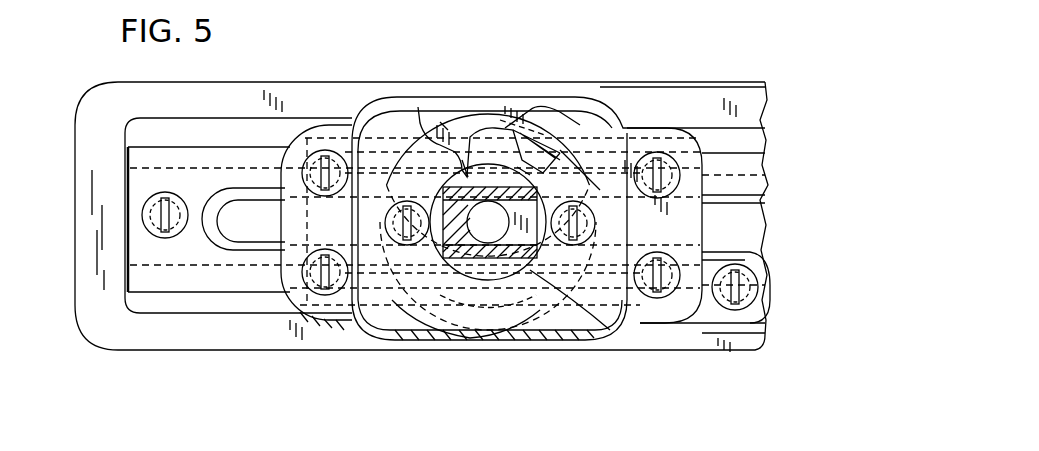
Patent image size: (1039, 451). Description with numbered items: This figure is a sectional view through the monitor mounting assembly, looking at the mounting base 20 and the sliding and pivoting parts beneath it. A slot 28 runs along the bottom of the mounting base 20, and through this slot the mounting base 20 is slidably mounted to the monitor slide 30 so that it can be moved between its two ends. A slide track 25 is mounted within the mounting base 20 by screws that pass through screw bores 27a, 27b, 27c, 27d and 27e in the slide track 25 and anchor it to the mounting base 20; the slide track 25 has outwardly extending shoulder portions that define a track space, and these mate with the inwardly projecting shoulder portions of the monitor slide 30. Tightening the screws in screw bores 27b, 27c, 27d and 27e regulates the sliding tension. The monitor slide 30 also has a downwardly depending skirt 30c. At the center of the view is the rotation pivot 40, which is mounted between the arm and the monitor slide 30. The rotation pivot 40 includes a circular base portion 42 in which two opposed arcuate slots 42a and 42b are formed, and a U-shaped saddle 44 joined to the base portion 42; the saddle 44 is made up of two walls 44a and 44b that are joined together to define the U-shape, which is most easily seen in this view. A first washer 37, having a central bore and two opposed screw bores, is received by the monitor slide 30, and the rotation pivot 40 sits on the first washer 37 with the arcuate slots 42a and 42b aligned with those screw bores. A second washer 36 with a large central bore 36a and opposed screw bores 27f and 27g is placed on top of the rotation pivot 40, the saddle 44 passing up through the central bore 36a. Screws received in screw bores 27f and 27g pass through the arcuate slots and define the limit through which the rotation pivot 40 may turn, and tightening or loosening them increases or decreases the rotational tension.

The mounting base 20 is at (296, 82).
The slide track 25 is at (183, 150).
The screw bore 27a is at (143, 208).
The screw bore 27b is at (325, 156).
The screw bore 27c is at (298, 284).
The screw bore 27d is at (678, 162).
The screw bore 27e is at (693, 323).
The screw bore 27f is at (400, 201).
The screw bore 27g is at (597, 225).
The slot 28 is at (256, 198).
The monitor slide 30 is at (418, 107).
The skirt 30c is at (557, 347).
The second washer 36 is at (377, 335).
The central bore 36a is at (470, 170).
The first washer 37 is at (407, 343).
The rotation pivot 40 is at (447, 127).
The circular base portion 42 is at (540, 178).
The arcuate slot 42a is at (510, 133).
The arcuate slot 42b is at (487, 300).
The U-shaped saddle 44 is at (507, 342).
The wall 44a is at (607, 337).
The wall 44b is at (517, 167).